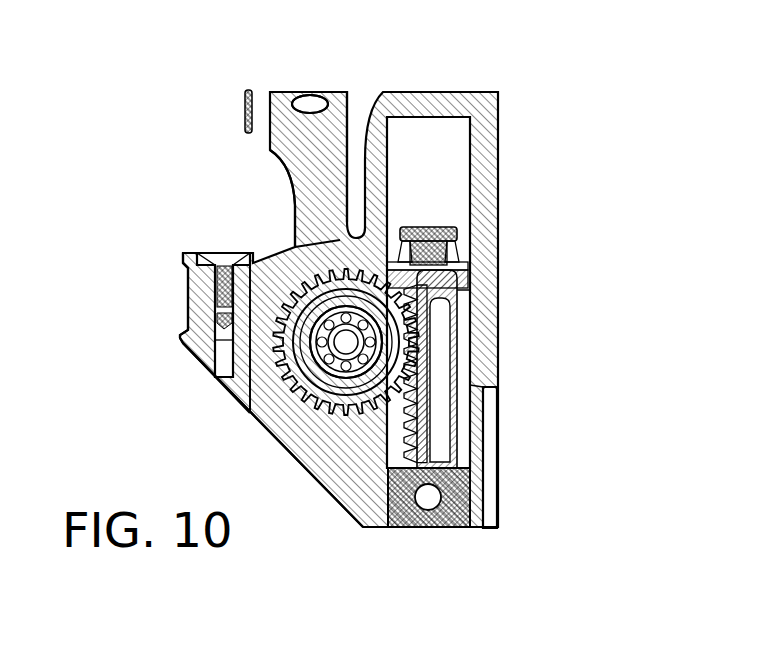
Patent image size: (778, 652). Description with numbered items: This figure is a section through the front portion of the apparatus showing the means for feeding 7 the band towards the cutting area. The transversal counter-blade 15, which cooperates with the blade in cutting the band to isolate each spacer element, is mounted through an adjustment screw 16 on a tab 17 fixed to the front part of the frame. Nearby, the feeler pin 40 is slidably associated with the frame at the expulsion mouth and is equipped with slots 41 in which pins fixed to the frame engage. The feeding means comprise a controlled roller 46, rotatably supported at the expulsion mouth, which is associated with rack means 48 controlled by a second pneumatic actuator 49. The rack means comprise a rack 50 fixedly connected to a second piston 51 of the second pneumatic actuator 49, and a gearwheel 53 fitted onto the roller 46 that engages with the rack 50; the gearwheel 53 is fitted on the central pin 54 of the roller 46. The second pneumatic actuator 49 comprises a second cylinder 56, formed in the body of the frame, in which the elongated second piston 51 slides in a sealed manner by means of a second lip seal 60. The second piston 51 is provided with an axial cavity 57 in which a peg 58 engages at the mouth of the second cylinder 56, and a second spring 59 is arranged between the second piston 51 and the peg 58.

The means for feeding 7 is at (503, 212).
The transversal counter-blade 15 is at (253, 252).
The adjustment screw 16 is at (197, 294).
The tab 17 is at (280, 442).
The feeler pin 40 is at (297, 174).
The slots 41 is at (310, 97).
The controlled roller 46 is at (323, 424).
The rack means 48 is at (418, 513).
The second pneumatic actuator 49 is at (430, 205).
The rack 50 is at (467, 440).
The second piston 51 is at (479, 226).
The gearwheel 53 is at (368, 432).
The central pin 54 is at (213, 373).
The second cylinder 56 is at (394, 156).
The axial cavity 57 is at (476, 468).
The peg 58 is at (445, 426).
The second spring 59 is at (457, 296).
The second lip seal 60 is at (474, 265).